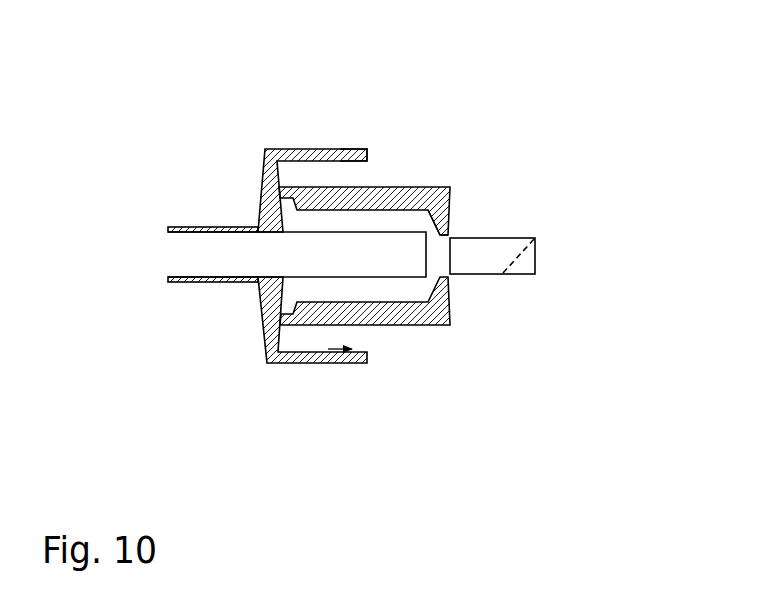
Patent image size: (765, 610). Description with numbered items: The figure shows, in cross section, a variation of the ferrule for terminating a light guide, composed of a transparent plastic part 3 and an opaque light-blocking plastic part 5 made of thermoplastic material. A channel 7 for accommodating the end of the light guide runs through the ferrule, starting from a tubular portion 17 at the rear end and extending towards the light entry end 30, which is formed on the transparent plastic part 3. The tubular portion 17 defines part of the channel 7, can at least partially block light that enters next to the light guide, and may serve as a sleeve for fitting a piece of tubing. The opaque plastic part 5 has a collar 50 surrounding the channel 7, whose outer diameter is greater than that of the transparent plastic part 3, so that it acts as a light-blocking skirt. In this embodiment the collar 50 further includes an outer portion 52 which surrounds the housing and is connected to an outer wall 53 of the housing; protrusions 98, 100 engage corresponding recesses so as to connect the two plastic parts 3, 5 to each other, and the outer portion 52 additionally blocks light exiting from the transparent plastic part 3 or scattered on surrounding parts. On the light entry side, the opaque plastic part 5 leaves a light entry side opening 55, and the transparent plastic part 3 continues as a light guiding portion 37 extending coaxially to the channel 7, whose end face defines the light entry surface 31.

The transparent plastic part 3 is at (341, 232).
The opaque light-blocking plastic part 5 is at (408, 187).
The channel 7 is at (230, 267).
The tubular portion 17 is at (192, 227).
The light entry end 30 is at (564, 227).
The light entry surface 31 is at (564, 201).
The light guiding portion 37 is at (534, 238).
The collar 50 is at (341, 239).
The outer portion 52 is at (295, 363).
The outer wall 53 is at (363, 335).
The light entry side opening 55 is at (448, 242).
The protrusion 98 is at (428, 100).
The protrusion 100 is at (345, 162).